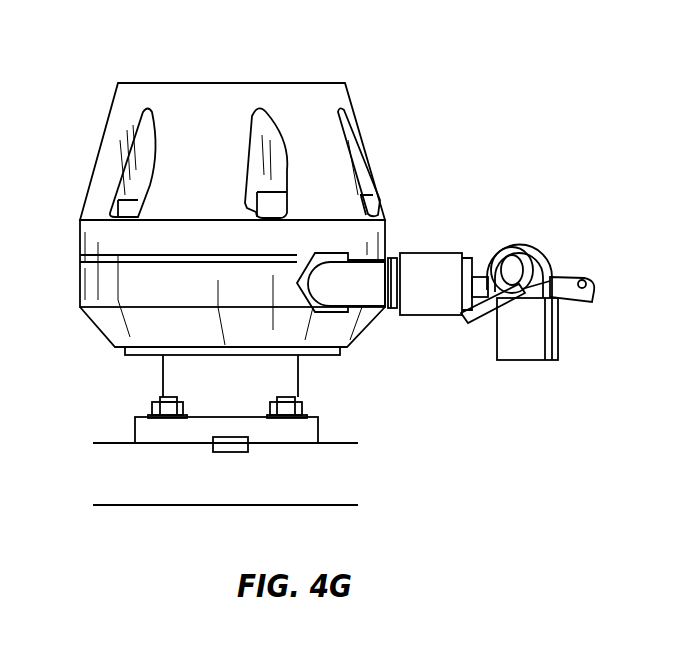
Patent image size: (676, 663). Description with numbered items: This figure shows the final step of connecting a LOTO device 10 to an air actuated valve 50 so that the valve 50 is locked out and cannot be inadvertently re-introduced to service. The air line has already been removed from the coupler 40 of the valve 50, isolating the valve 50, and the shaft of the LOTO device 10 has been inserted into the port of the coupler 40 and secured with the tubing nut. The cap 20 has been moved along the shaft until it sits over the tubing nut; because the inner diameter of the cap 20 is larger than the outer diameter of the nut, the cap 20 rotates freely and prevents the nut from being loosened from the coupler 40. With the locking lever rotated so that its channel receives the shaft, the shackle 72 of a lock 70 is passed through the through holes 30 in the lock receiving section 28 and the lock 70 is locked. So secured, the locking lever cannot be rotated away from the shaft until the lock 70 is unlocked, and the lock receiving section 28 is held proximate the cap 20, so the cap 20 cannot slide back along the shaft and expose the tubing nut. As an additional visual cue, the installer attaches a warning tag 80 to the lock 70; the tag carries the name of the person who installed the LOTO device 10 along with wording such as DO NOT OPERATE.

The air actuated valve 50 is at (300, 55).
The LOTO device 10 is at (460, 195).
The cap 20 is at (432, 267).
The through holes 30 is at (508, 250).
The lock receiving section 28 is at (557, 266).
The coupler 40 is at (398, 316).
The lock 70 is at (567, 347).
The shackle 72 is at (593, 299).
The warning tag 80 is at (483, 311).